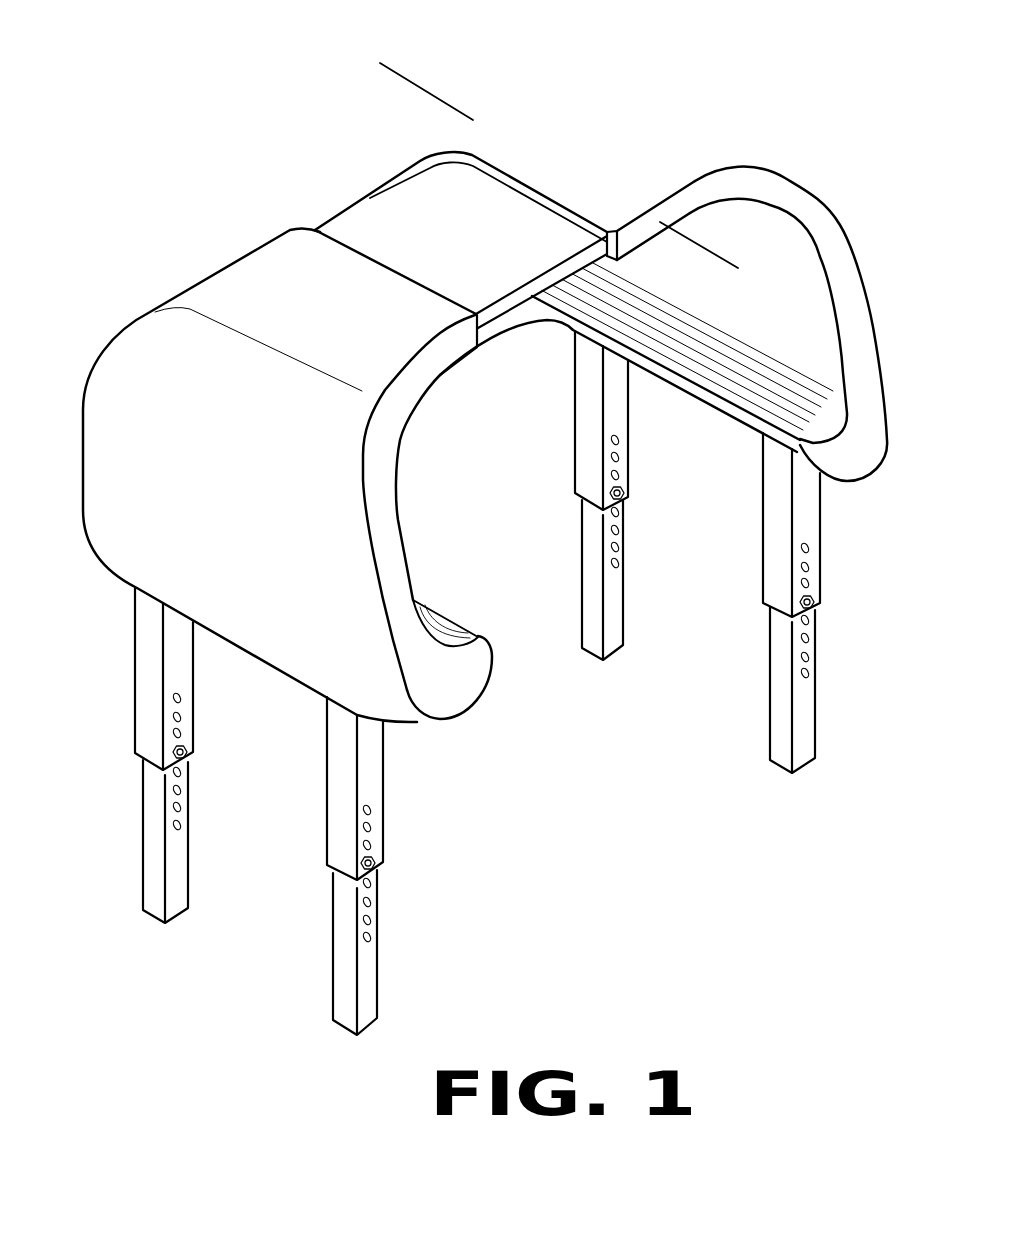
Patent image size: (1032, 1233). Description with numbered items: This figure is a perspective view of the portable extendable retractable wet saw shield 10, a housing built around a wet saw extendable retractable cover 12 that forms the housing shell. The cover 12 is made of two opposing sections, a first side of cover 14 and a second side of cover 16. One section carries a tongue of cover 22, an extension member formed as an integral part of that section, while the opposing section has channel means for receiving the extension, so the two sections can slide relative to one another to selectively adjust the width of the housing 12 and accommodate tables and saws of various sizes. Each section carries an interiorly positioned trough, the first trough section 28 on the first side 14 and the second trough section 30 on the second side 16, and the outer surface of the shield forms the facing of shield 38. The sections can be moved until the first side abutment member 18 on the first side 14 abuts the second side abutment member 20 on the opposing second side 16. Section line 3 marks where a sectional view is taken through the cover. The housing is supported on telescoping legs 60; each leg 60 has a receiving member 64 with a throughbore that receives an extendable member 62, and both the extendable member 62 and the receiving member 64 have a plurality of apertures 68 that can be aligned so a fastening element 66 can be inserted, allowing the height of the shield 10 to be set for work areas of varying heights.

The portable extendable retractable wet saw shield 10 is at (208, 135).
The wet saw extendable retractable cover 12 is at (338, 175).
The section line of FIG. 3 is at (445, 90).
The first side of cover 14 is at (238, 285).
The second side of cover 16 is at (645, 115).
The first side abutment member 18 is at (393, 260).
The second side abutment member 20 is at (557, 198).
The tongue of cover 22 is at (493, 242).
The first trough section 28 is at (423, 615).
The second trough section 30 is at (770, 413).
The facing of shield 38 is at (457, 677).
The telescoping legs 60 is at (245, 980).
The extendable member 62 is at (173, 870).
The receiving member 64 is at (178, 648).
The fastening element 66 is at (185, 760).
The apertures 68 is at (180, 717).